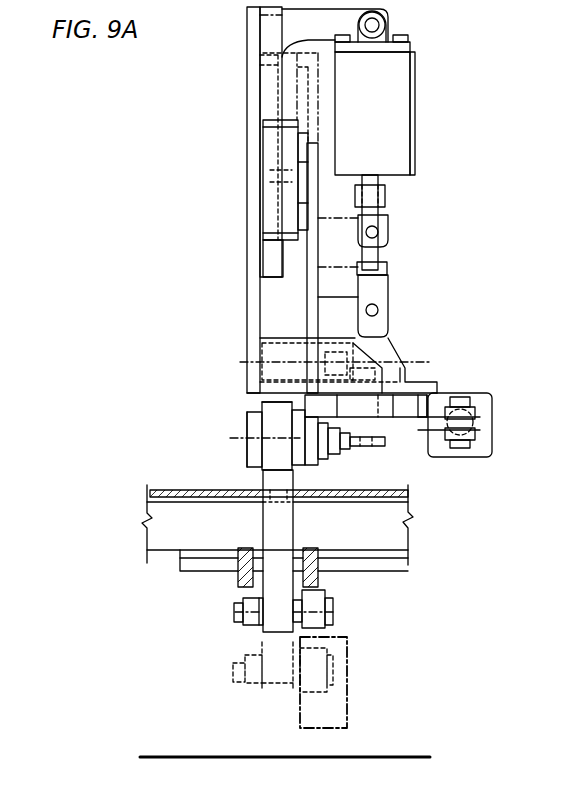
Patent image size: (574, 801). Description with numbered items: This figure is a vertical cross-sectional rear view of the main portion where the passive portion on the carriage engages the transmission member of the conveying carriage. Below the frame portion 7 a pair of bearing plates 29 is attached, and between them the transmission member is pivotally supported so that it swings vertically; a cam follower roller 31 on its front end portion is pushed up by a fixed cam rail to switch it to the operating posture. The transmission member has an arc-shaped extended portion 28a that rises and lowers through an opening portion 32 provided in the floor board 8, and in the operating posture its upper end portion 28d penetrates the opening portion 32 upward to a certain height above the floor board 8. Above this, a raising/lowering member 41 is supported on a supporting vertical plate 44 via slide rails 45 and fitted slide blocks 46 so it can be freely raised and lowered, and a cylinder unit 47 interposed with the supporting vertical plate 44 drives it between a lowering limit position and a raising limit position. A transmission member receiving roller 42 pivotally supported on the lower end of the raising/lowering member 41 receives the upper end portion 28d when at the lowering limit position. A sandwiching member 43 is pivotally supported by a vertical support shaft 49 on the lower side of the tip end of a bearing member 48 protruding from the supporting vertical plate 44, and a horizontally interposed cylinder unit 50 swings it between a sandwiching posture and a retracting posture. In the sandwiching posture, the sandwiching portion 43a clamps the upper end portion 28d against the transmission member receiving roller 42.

The frame portion 7 is at (409, 540).
The floor board 8 is at (190, 487).
The arc-shaped extended portion 28a is at (273, 512).
The upper end portion 28d is at (275, 410).
The bearing plates 29 is at (237, 578).
The cam follower roller 31 is at (350, 657).
The opening portion 32 is at (295, 508).
The raising/lowering member 41 is at (312, 257).
The transmission member receiving roller 42 is at (250, 438).
The sandwiching member 43 is at (283, 422).
The sandwiching portion 43a is at (283, 455).
The supporting vertical plate 44 is at (251, 245).
The slide rails 45 is at (270, 100).
The slide blocks 46 is at (268, 185).
The cylinder unit 47 is at (390, 115).
The bearing member 48 is at (365, 363).
The vertical support shaft 49 is at (390, 408).
The cylinder unit 50 is at (487, 417).